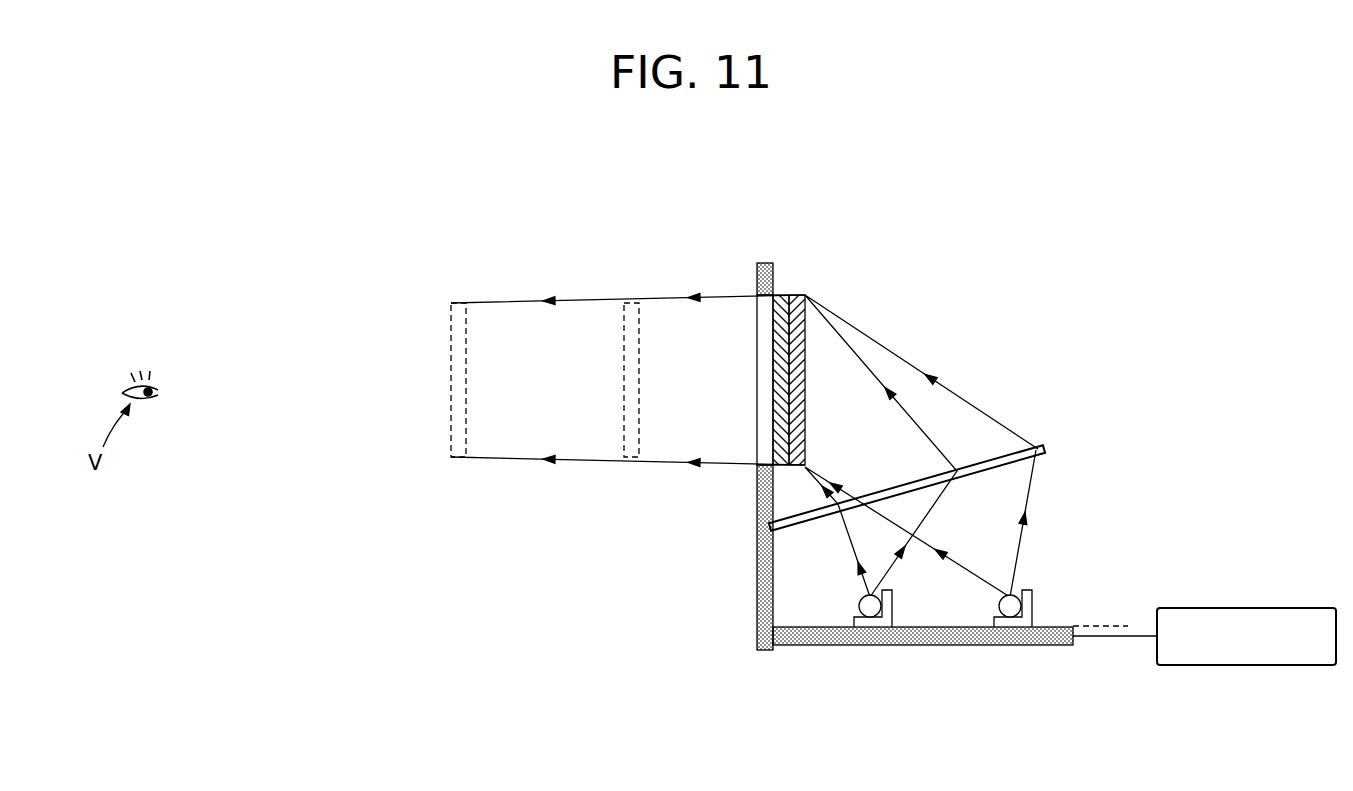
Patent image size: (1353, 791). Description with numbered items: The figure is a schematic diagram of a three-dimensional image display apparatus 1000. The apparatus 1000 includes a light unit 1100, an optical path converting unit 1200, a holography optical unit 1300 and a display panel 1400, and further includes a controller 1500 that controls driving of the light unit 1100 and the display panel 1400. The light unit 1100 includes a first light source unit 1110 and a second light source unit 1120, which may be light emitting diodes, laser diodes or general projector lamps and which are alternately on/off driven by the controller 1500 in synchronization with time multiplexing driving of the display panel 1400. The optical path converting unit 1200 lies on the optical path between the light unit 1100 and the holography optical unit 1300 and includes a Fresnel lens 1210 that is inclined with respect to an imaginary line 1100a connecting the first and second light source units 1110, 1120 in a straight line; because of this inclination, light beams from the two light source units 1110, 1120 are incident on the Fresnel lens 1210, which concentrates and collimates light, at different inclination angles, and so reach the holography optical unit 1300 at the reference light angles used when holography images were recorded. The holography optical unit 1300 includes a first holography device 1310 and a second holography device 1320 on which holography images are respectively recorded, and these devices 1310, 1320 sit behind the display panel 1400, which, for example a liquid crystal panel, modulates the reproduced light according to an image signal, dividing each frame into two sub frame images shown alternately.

The 3D image display apparatus 1000 is at (1080, 254).
The light unit 1100 is at (1028, 707).
The imaginary line 1100a is at (1102, 623).
The first light source unit 1110 is at (872, 645).
The second light source unit 1120 is at (1011, 645).
The optical path converting unit 1200 is at (1045, 424).
The Fresnel lens 1210 is at (1045, 451).
The holography optical unit 1300 is at (852, 214).
The first holography device 1310 is at (805, 295).
The second holography device 1320 is at (783, 295).
The display panel 1400 is at (760, 315).
The controller 1500 is at (1245, 608).